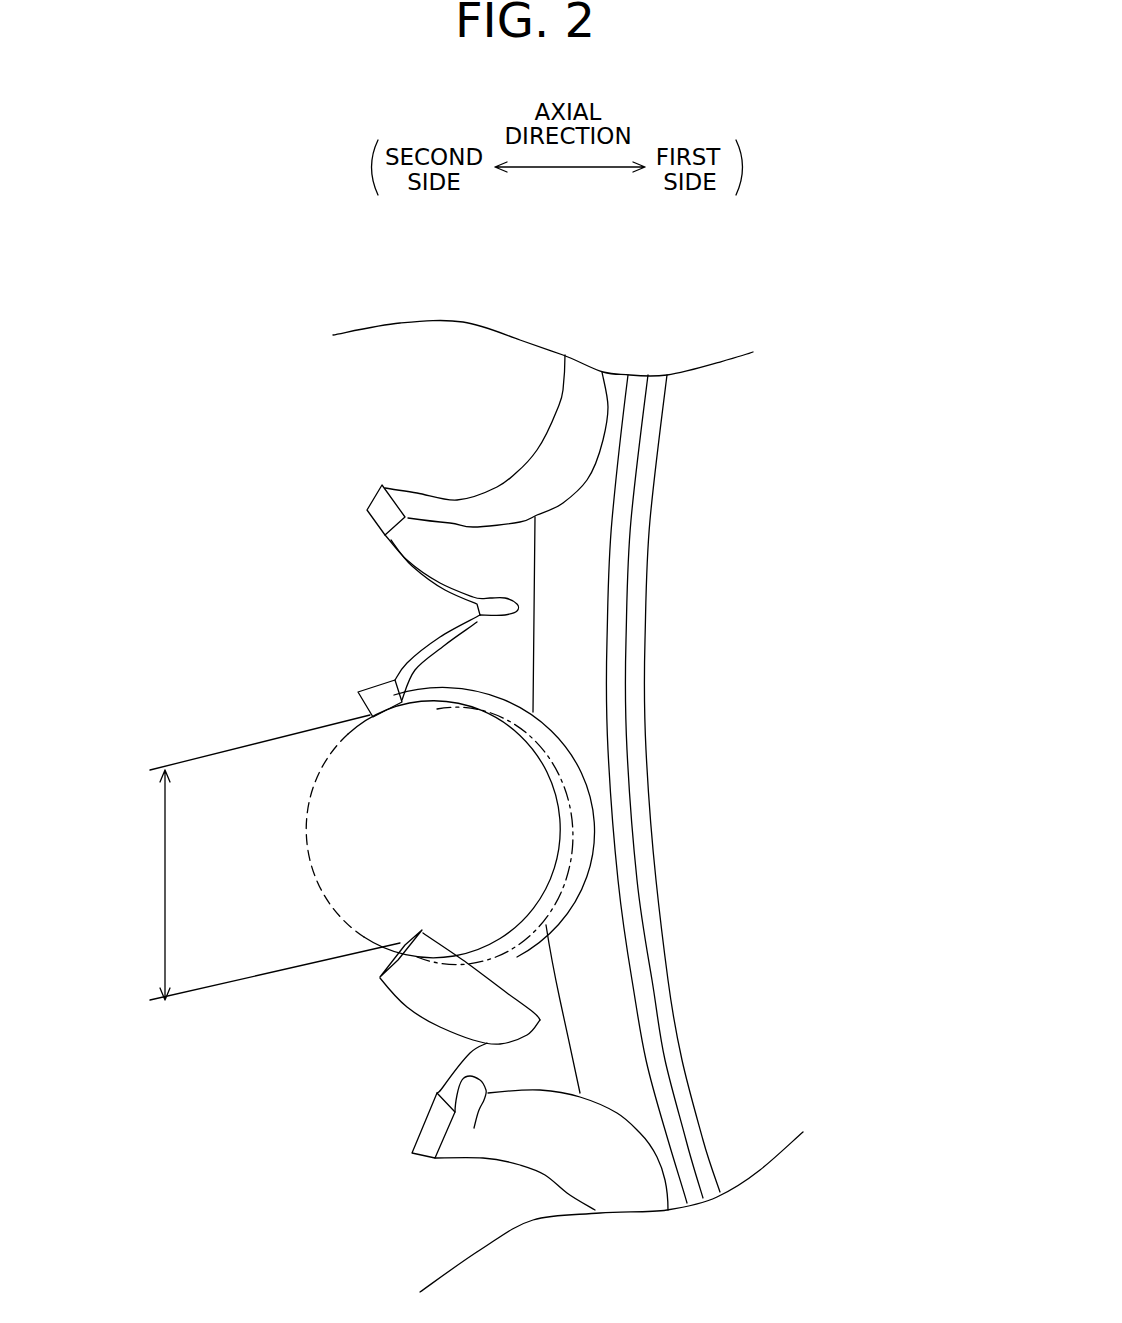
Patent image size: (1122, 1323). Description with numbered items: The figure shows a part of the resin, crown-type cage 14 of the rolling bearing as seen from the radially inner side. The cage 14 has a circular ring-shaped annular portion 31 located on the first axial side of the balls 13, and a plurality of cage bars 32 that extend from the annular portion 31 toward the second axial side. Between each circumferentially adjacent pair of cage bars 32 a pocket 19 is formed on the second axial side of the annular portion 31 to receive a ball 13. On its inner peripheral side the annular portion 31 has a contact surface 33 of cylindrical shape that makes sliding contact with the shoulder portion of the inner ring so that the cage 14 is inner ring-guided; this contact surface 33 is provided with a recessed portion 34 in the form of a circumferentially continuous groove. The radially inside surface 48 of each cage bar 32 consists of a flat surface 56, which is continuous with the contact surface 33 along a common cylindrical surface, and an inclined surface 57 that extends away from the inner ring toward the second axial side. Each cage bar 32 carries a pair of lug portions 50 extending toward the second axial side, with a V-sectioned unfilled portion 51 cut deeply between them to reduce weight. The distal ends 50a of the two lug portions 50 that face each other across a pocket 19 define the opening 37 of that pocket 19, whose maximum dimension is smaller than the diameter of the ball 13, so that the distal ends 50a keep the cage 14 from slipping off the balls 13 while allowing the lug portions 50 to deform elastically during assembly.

The ball 13 is at (315, 888).
The cage 14 is at (568, 806).
The pocket 19 is at (336, 848).
The annular portion 31 is at (645, 748).
The cage bar 32 is at (374, 665).
The contact surface 33 is at (653, 789).
The recessed portion 34 is at (627, 840).
The opening 37 is at (387, 947).
The radially inside surface 48 is at (546, 562).
The lug portion 50 is at (457, 792).
The distal end 50a is at (378, 700).
The unfilled portion 51 is at (417, 601).
The flat surface 56 is at (557, 623).
The inclined surface 57 is at (463, 552).